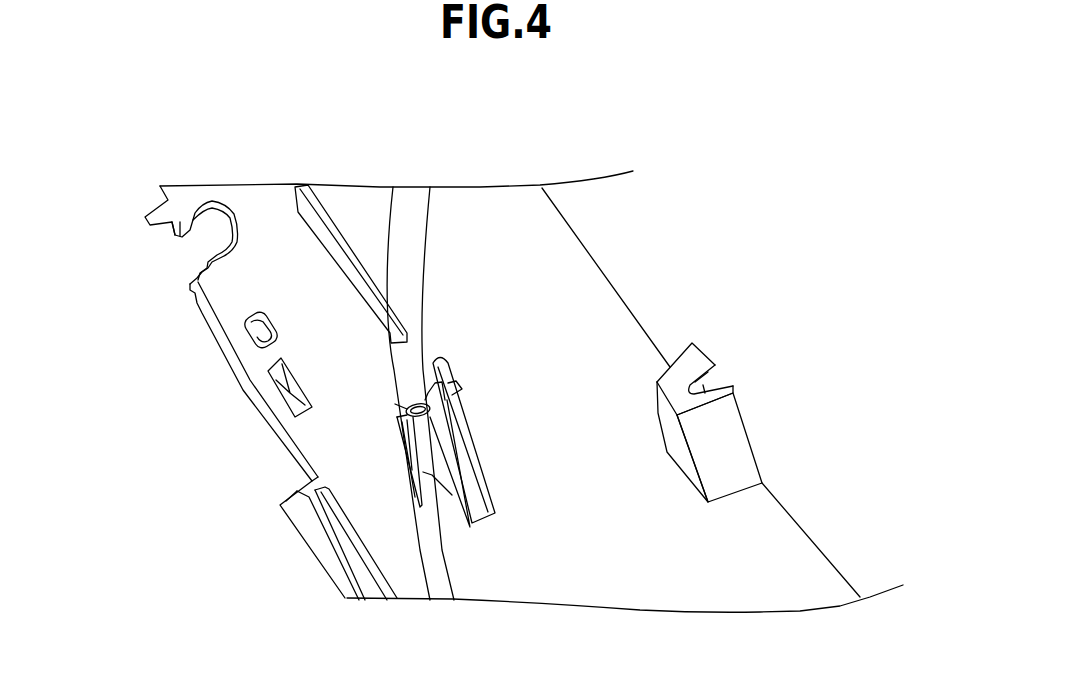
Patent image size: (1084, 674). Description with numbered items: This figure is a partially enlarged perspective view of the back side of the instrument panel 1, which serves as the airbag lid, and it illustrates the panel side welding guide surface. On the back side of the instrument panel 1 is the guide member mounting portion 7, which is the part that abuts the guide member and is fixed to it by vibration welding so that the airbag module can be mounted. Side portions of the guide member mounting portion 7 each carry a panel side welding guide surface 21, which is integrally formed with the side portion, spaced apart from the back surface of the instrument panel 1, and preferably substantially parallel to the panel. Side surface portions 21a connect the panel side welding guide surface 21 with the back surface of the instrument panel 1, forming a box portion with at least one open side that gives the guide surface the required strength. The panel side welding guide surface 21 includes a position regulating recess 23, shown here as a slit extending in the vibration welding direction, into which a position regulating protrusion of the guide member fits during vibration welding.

The instrument panel 1 is at (207, 384).
The guide member mounting portion 7 is at (617, 207).
The panel side welding guide surface 21 is at (782, 334).
The side surface portions 21a is at (728, 448).
The position regulating recess 23 is at (710, 370).